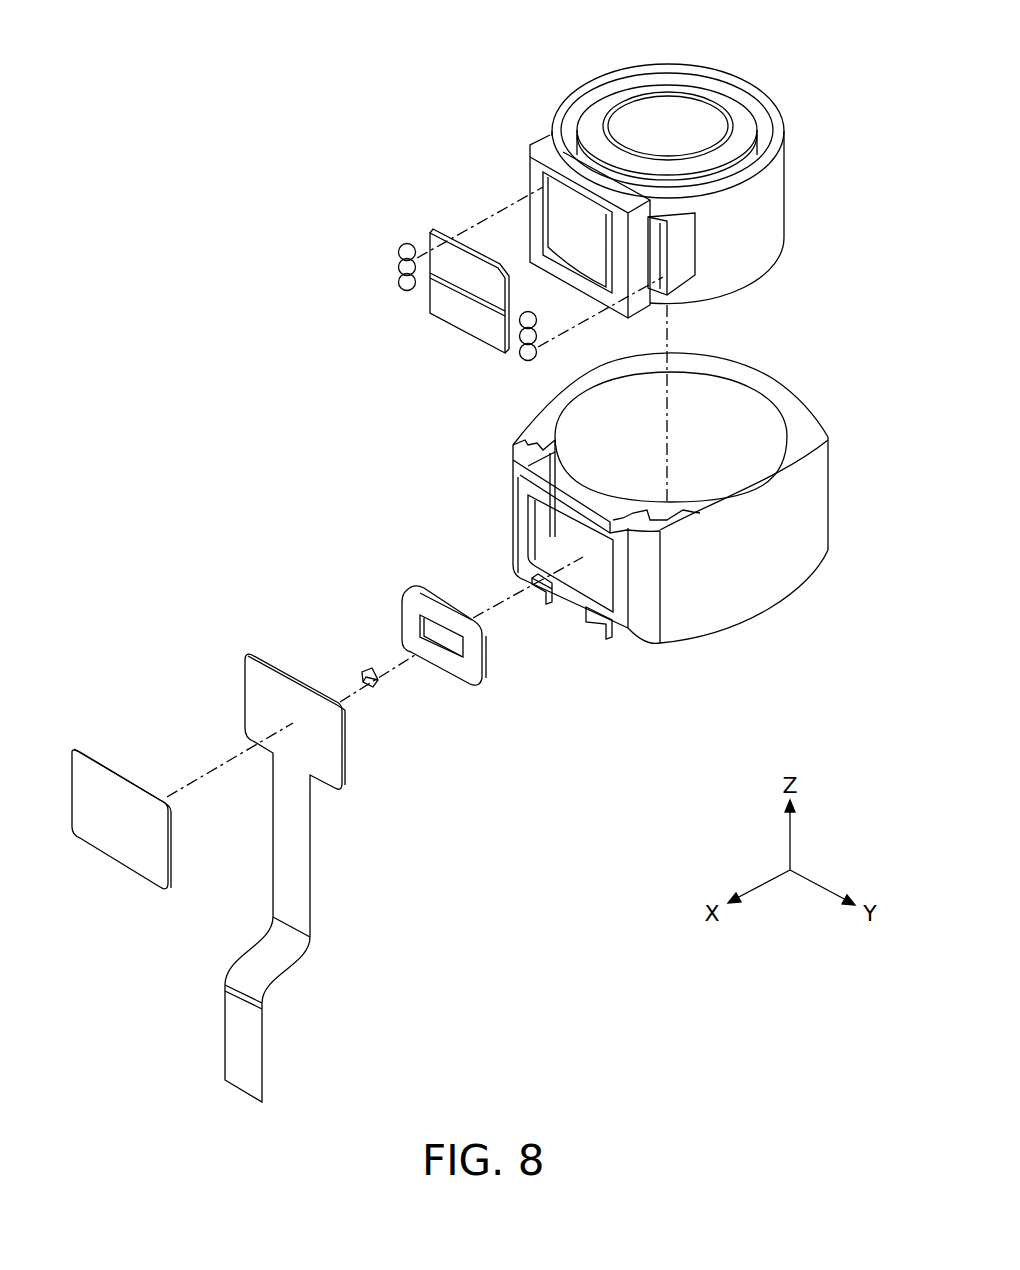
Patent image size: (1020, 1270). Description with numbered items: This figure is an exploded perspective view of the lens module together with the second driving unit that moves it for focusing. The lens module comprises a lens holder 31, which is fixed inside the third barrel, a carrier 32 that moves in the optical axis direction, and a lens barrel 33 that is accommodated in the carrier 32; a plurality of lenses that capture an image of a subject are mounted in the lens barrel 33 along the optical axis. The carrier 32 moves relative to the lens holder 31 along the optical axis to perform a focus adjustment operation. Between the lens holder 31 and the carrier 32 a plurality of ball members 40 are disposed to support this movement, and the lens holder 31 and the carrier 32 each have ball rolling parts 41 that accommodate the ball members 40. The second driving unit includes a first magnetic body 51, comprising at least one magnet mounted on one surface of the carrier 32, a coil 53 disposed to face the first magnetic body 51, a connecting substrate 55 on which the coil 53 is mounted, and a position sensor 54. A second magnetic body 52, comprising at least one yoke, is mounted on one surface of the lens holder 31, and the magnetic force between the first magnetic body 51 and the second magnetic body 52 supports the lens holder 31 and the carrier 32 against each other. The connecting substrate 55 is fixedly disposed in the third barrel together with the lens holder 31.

The lens holder 31 is at (820, 503).
The carrier 32 is at (784, 202).
The lens barrel 33 is at (733, 107).
The ball members 40 is at (523, 353).
The ball rolling parts 41 is at (667, 273).
The first magnetic body 51 is at (440, 250).
The second magnetic body 52 is at (88, 763).
The coil 53 is at (410, 596).
The position sensor 54 is at (360, 672).
The connecting substrate 55 is at (250, 676).